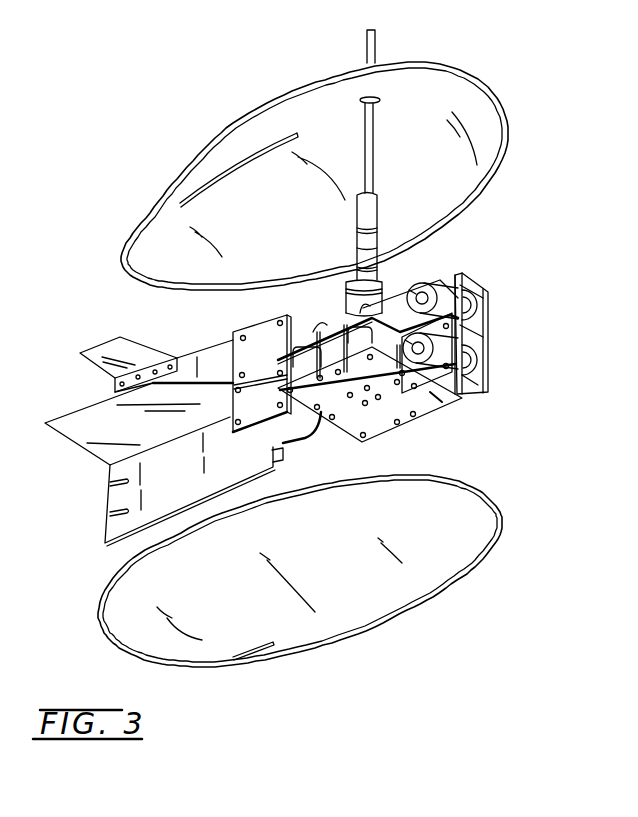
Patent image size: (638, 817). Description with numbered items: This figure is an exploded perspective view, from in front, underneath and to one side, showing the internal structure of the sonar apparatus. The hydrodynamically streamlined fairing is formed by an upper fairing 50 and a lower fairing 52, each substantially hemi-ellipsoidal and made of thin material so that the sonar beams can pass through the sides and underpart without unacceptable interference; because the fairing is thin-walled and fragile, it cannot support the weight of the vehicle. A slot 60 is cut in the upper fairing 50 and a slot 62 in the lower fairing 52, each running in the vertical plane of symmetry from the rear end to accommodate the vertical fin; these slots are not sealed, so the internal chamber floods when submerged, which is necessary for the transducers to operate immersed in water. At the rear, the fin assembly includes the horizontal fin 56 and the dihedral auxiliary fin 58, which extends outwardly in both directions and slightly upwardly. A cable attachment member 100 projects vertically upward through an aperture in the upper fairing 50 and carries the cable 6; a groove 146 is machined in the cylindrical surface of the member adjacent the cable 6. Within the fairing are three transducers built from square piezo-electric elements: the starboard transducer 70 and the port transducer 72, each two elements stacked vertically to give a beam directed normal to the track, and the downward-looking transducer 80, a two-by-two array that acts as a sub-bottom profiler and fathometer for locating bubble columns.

The cable 6 is at (377, 47).
The upper fairing 50 is at (453, 68).
The lower fairing 52 is at (462, 557).
The horizontal fin 56 is at (77, 440).
The auxiliary fin 58 is at (93, 358).
The slot 60 is at (180, 202).
The slot 62 is at (233, 657).
The starboard transducer 70 is at (257, 333).
The port transducer 72 is at (487, 318).
The downward-looking transducer 80 is at (421, 410).
The cable attachment member 100 is at (356, 274).
The groove 146 is at (378, 228).